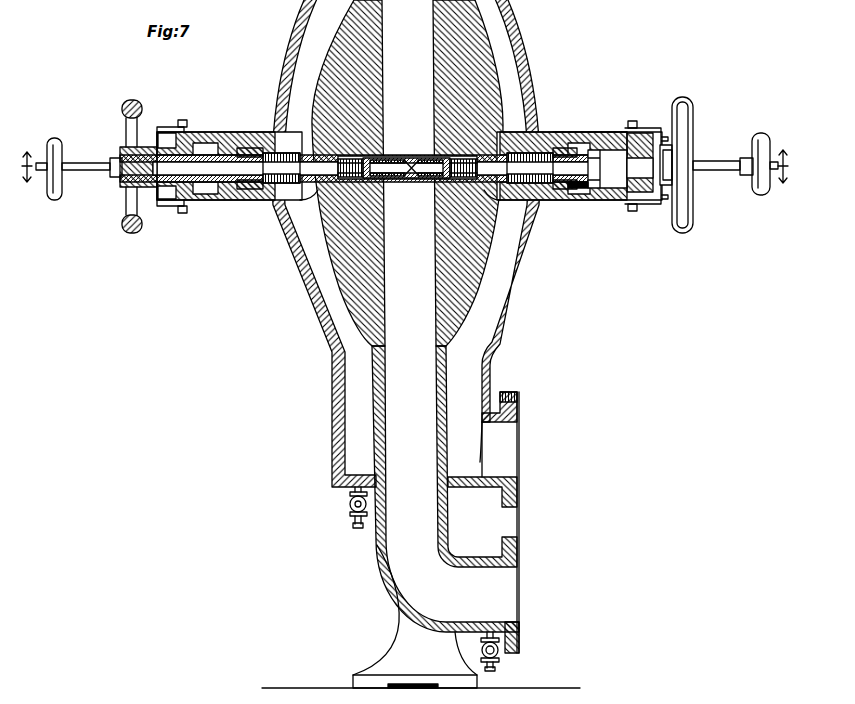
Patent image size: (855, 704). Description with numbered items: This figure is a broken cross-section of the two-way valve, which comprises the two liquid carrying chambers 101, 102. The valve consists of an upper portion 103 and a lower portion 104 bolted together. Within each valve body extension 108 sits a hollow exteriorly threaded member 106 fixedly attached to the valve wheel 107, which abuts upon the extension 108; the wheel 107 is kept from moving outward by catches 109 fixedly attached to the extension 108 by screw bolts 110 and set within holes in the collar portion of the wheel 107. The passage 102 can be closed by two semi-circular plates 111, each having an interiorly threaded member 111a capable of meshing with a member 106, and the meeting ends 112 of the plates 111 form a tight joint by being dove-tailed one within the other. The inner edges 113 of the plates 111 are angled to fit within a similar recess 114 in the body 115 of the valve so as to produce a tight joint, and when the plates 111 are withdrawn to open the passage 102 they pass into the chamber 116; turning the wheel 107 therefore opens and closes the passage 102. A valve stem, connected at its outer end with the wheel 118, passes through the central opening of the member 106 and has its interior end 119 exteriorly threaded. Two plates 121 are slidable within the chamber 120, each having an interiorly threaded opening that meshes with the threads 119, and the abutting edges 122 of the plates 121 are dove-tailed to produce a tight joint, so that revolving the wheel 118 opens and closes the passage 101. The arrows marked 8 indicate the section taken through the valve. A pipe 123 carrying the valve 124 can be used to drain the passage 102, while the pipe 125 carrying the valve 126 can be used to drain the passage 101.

The section line arrow 8 is at (405, 156).
The liquid carrying chamber 101 is at (421, 384).
The liquid carrying chamber 102 is at (478, 44).
The upper portion 103 is at (519, 56).
The lower portion 104 is at (537, 254).
The hollow exteriorly threaded member 106 is at (207, 150).
The valve wheel 107 is at (138, 109).
The valve body extension 108 is at (590, 134).
The catch 109 is at (166, 127).
The screw bolt 110 is at (183, 121).
The semi-circular plate 111 is at (283, 133).
The interiorly threaded member 111a is at (557, 125).
The meeting end 112 is at (210, 172).
The inner edge 113 is at (290, 145).
The recess 114 is at (318, 190).
The body 115 is at (348, 173).
The chamber 116 is at (590, 190).
The wheel 118 is at (55, 138).
The exteriorly threaded interior end 119 is at (348, 160).
The chamber 120 is at (461, 160).
The plate 121 is at (425, 160).
The abutting edge 122 is at (413, 180).
The pipe 123 is at (358, 526).
The valve 124 is at (349, 504).
The pipe 125 is at (494, 664).
The valve 126 is at (481, 649).